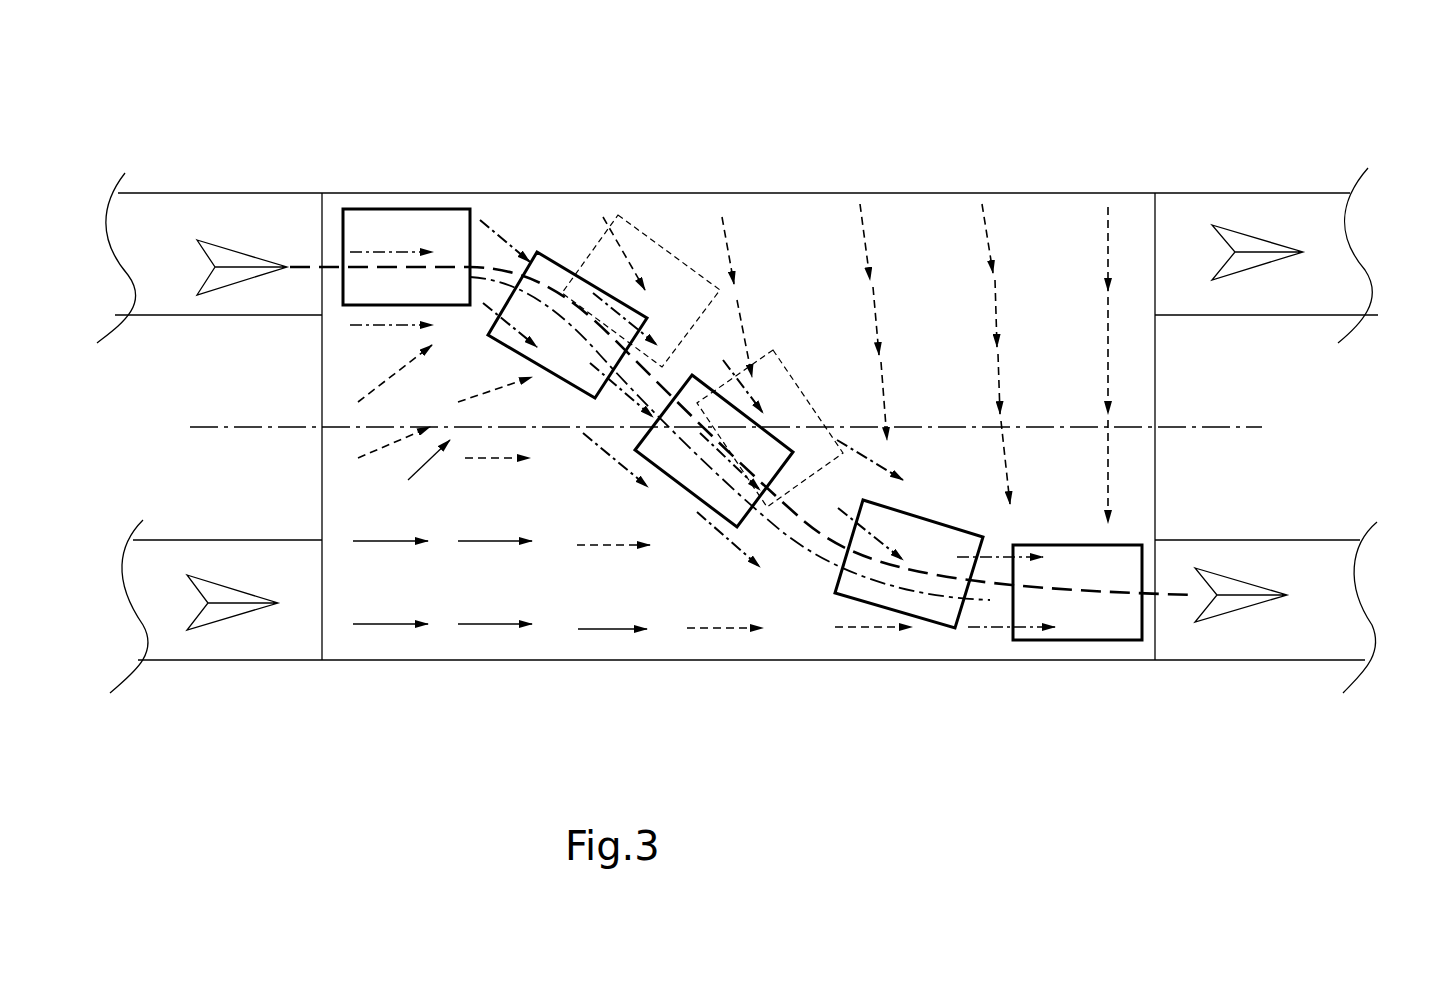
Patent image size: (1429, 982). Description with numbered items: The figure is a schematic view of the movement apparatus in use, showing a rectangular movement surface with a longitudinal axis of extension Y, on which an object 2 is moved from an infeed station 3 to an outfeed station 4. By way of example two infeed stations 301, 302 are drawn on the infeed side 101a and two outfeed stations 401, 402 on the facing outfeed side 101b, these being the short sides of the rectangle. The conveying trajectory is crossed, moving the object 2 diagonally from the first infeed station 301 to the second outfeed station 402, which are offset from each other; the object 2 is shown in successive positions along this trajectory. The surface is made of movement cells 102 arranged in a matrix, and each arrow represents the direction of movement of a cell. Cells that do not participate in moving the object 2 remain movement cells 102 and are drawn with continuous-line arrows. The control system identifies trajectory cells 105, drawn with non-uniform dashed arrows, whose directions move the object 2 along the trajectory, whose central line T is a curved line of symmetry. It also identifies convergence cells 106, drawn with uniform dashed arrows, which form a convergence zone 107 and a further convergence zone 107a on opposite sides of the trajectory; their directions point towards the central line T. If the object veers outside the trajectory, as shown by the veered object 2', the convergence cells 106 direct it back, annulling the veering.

The object 2 is at (742, 430).
The veered object 2' is at (702, 407).
The infeed station 3 is at (143, 460).
The outfeed station 4 is at (1288, 388).
The infeed side 101a is at (322, 343).
The outfeed side 101b is at (1160, 358).
The movement cells 102 is at (375, 623).
The trajectory cells 105 is at (500, 233).
The convergence cells 106 is at (378, 385).
The convergence zone 107 is at (916, 258).
The further convergence zone 107a is at (408, 480).
The first infeed station 301 is at (175, 213).
The second infeed station 302 is at (260, 640).
The first outfeed station 401 is at (1305, 212).
The second outfeed station 402 is at (1305, 632).
The central line T is at (790, 513).
The longitudinal axis of extension Y is at (1240, 427).